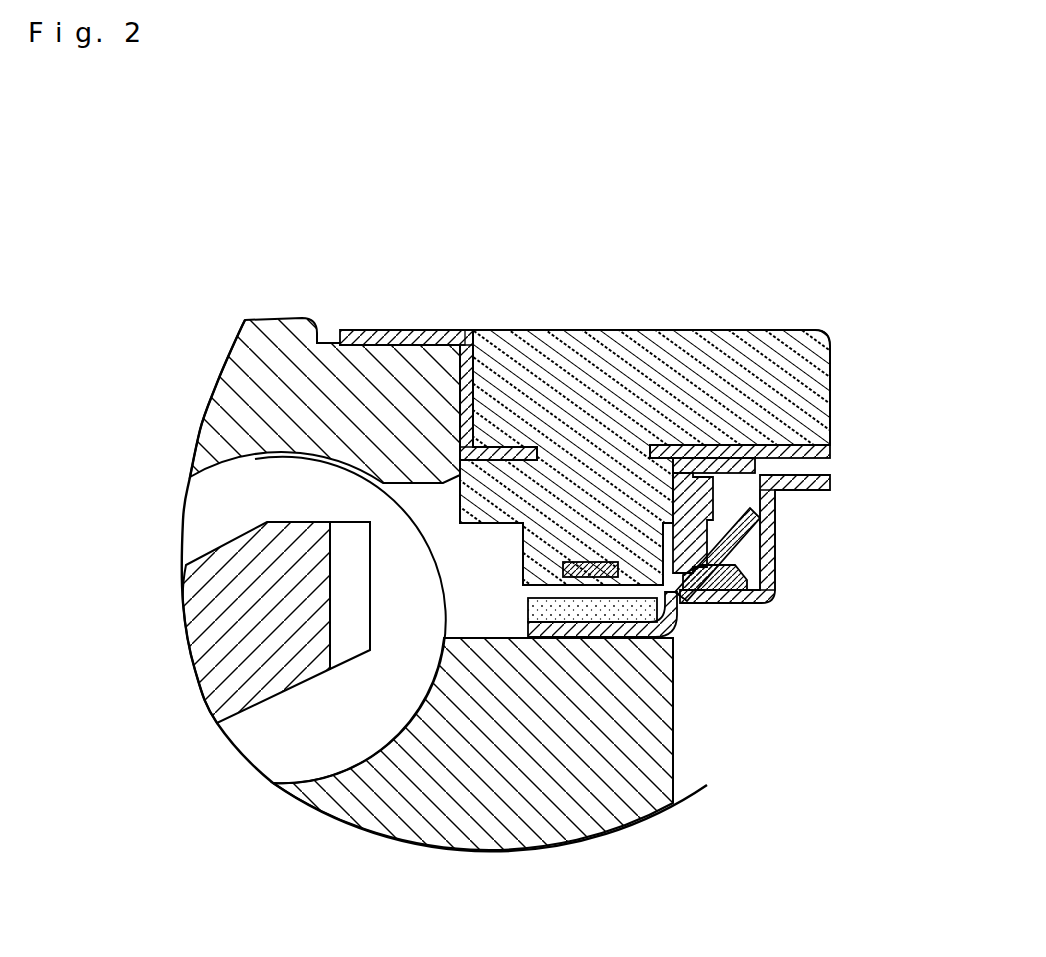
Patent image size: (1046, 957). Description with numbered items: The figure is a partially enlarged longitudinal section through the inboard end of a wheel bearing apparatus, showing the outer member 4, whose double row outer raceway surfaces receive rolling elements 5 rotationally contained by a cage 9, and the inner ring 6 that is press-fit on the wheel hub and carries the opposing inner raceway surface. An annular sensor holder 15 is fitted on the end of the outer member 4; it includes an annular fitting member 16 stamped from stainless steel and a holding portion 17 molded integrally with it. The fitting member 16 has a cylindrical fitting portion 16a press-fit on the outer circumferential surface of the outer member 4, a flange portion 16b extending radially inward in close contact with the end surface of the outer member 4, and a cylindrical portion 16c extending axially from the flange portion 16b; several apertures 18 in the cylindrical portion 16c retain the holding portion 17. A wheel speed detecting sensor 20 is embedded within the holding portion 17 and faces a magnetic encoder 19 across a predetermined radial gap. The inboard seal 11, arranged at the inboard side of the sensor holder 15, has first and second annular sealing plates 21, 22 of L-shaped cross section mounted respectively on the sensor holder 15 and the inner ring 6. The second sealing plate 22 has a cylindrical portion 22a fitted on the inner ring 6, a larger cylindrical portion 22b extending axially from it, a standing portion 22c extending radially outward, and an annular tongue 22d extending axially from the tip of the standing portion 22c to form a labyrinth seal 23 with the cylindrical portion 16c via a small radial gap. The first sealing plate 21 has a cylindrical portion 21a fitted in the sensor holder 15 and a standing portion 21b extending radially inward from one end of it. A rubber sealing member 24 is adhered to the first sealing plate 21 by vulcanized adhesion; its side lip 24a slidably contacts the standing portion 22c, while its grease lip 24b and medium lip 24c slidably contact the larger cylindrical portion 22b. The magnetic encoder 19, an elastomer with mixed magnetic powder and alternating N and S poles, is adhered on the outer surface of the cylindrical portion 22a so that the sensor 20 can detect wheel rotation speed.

The outer member 4 is at (247, 392).
The rolling elements 5 is at (215, 498).
The inner ring 6 is at (337, 803).
The cage 9 is at (237, 680).
The inboard seal 11 is at (747, 488).
The sensor holder 15 is at (634, 311).
The annular fitting member 16 is at (587, 245).
The cylindrical fitting portion 16a is at (423, 328).
The flange portion 16b is at (503, 330).
The cylindrical portion 16c is at (598, 330).
The holding portion 17 is at (680, 443).
The apertures 18 is at (545, 497).
The magnetic encoder 19 is at (665, 660).
The wheel speed detecting sensor 20 is at (445, 643).
The first annular sealing plate 21 is at (740, 394).
The cylindrical portion 21a is at (775, 458).
The standing portion 21b is at (705, 470).
The second annular sealing plate 22 is at (794, 582).
The cylindrical portion 22a is at (700, 642).
The larger cylindrical portion 22b is at (718, 612).
The standing portion 22c is at (776, 524).
The annular tongue 22d is at (822, 495).
The labyrinth seal 23 is at (820, 345).
The sealing member 24 is at (536, 572).
The side lip 24a is at (665, 508).
The grease lip 24b is at (655, 550).
The medium lip 24c is at (555, 588).